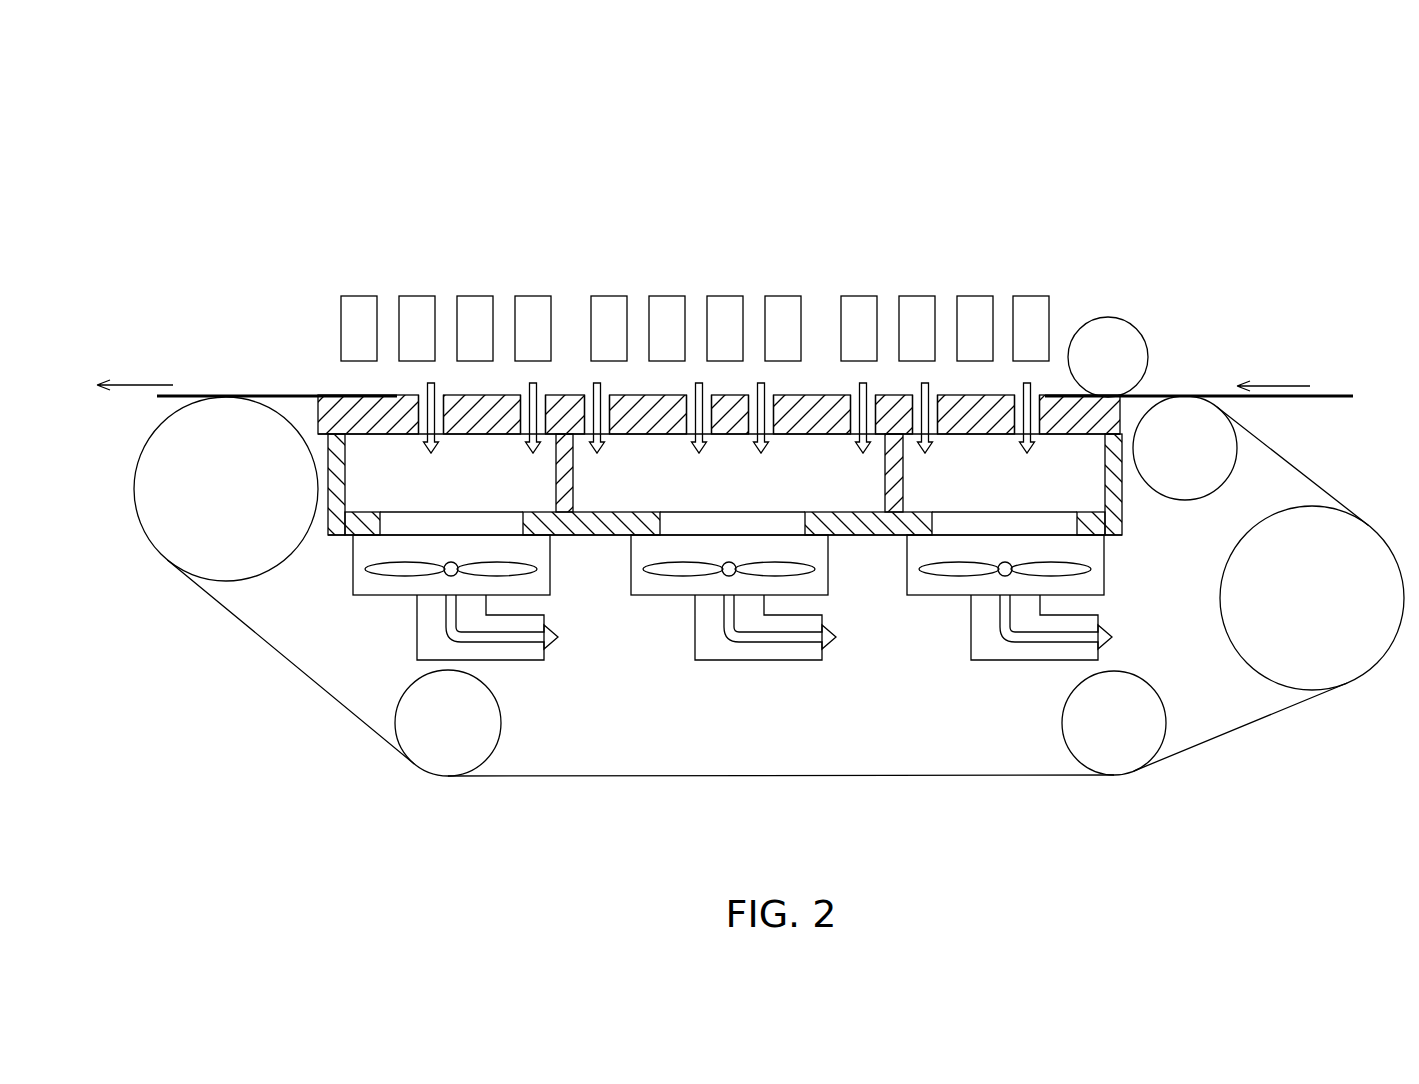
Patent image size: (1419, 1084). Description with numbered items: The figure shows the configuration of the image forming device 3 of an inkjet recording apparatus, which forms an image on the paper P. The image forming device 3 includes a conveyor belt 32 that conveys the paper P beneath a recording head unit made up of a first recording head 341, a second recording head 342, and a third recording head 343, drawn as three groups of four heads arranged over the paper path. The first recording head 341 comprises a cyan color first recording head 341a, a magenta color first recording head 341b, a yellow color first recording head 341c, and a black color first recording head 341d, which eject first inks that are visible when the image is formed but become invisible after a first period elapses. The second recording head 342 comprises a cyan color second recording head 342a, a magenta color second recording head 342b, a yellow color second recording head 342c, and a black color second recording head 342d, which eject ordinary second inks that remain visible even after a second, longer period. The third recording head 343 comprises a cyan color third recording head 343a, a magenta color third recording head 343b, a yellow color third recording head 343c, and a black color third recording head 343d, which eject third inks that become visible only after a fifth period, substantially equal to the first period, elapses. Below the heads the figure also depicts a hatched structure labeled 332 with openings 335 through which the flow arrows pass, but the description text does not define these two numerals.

The image forming device 3 is at (1140, 149).
The conveyor belt 32 is at (320, 686).
The heating plate 332 is at (719, 445).
The slot opening 335 is at (752, 425).
The first recording head 341 is at (1093, 225).
The cyan color first recording head 341a is at (1033, 296).
The magenta color first recording head 341b is at (972, 296).
The yellow color first recording head 341c is at (912, 296).
The black color first recording head 341d is at (863, 296).
The second recording head 342 is at (837, 165).
The cyan color second recording head 342a is at (787, 296).
The magenta color second recording head 342b is at (725, 296).
The yellow color second recording head 342c is at (667, 296).
The black color second recording head 342d is at (615, 296).
The third recording head 343 is at (312, 225).
The cyan color third recording head 343a is at (528, 296).
The magenta color third recording head 343b is at (470, 296).
The yellow color third recording head 343c is at (420, 296).
The black color third recording head 343d is at (361, 296).
The paper P is at (195, 394).